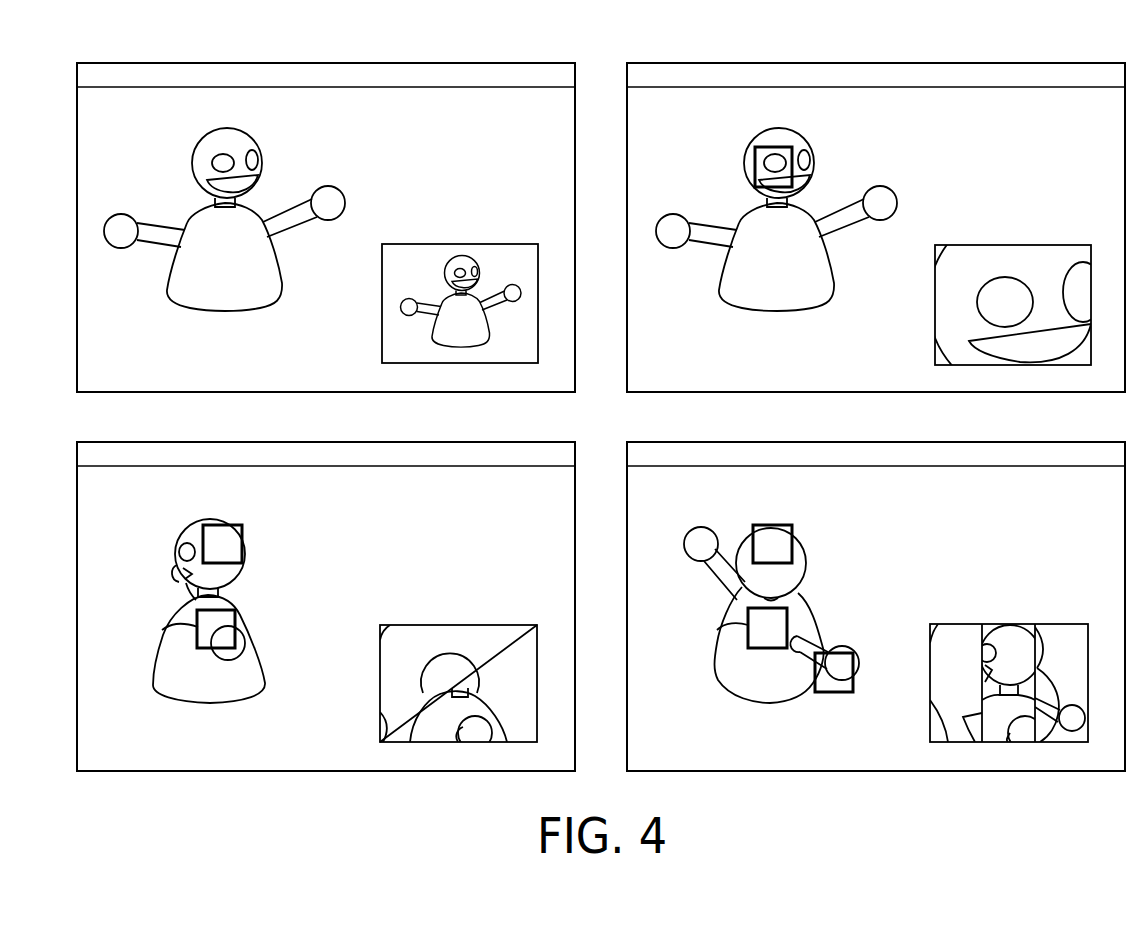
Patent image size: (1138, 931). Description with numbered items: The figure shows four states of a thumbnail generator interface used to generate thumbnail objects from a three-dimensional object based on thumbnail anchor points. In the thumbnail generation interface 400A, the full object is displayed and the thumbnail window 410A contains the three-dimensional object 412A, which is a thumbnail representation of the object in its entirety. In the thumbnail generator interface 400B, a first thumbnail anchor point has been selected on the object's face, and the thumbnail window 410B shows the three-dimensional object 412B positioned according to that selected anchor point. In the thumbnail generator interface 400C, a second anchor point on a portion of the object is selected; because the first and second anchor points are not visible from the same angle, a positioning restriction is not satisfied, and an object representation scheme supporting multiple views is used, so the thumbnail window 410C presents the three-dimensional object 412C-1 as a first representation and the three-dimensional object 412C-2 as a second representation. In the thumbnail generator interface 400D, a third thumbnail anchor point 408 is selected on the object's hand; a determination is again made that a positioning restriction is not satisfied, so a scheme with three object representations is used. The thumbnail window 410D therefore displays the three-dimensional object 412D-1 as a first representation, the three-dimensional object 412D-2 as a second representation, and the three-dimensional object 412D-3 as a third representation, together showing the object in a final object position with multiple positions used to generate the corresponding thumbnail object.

The thumbnail generation interface 400A is at (115, 63).
The thumbnail generator interface 400B is at (670, 63).
The thumbnail generator interface 400C is at (115, 442).
The thumbnail generator interface 400D is at (670, 442).
The thumbnail anchor point 408 is at (830, 698).
The thumbnail window 410A is at (489, 244).
The thumbnail window 410B is at (1046, 245).
The thumbnail window 410C is at (485, 625).
The thumbnail window 410D is at (1038, 624).
The 3D object 412A is at (462, 256).
The 3D object 412B is at (1018, 255).
The 3D object 412C-1 is at (453, 633).
The 3D object 412C-2 is at (472, 735).
The 3D object 412D-1 is at (940, 703).
The 3D object 412D-2 is at (1008, 630).
The 3D object 412D-3 is at (1063, 737).